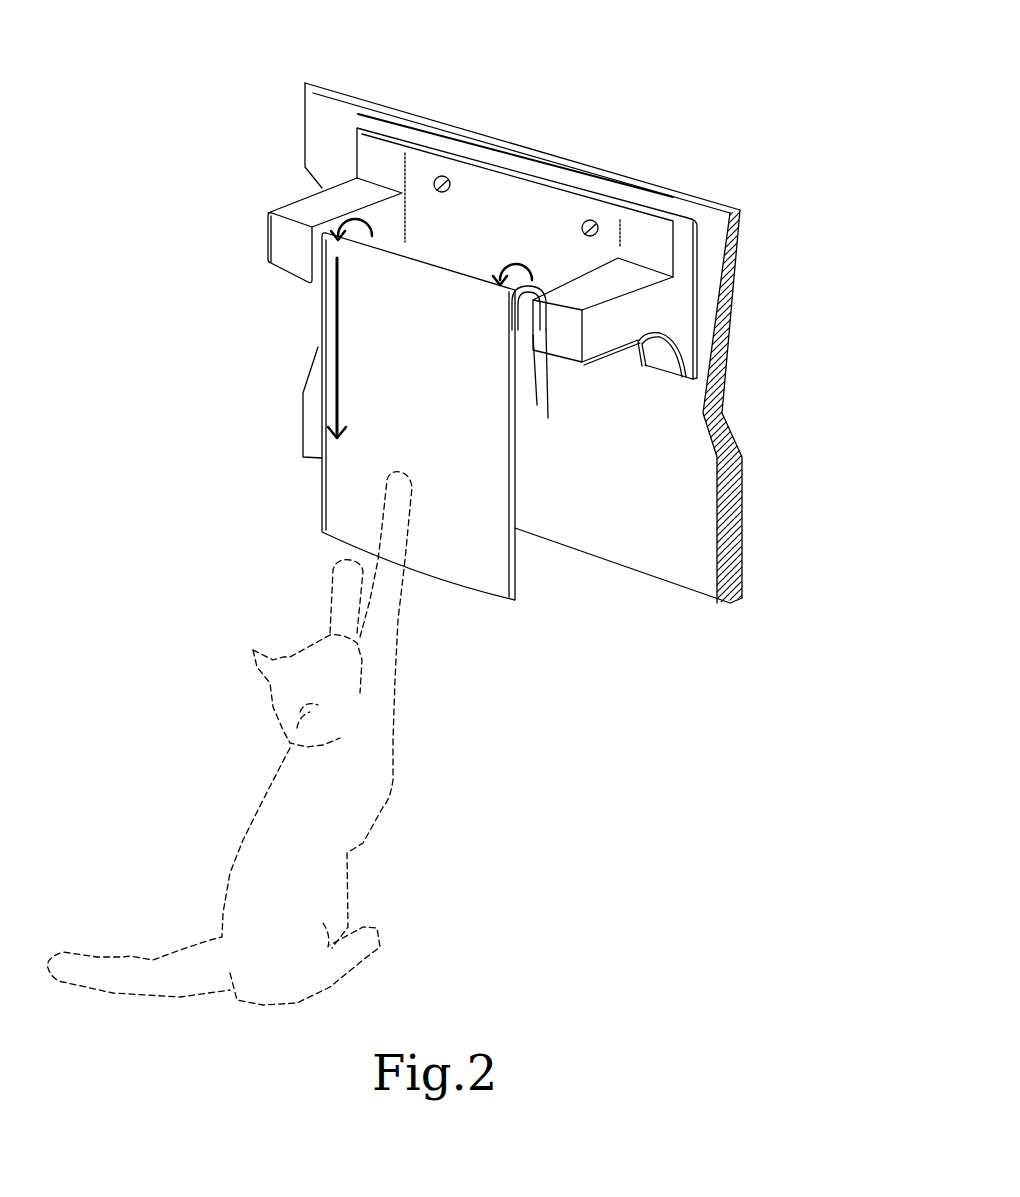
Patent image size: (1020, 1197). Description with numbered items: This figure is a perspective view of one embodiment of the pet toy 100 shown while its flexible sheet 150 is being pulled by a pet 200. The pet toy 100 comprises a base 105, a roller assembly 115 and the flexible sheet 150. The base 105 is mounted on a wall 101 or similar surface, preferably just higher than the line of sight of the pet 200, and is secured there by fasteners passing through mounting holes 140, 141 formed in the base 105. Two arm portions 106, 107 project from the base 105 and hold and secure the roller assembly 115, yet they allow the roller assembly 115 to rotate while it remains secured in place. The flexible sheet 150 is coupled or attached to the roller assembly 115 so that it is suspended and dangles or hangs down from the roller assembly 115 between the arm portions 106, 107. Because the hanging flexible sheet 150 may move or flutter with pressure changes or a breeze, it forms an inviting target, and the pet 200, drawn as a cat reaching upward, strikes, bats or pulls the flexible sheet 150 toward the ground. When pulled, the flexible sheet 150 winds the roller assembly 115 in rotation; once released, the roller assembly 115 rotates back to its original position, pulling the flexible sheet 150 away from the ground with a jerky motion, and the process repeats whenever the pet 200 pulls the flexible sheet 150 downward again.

The pet toy 100 is at (229, 56).
The wall 101 is at (642, 506).
The base 105 is at (517, 232).
The arm portion 106 is at (276, 209).
The arm portion 107 is at (590, 363).
The roller assembly 115 is at (537, 405).
The mounting hole 140 is at (447, 178).
The mounting hole 141 is at (594, 221).
The flexible sheet 150 is at (427, 404).
The pet 200 is at (216, 576).